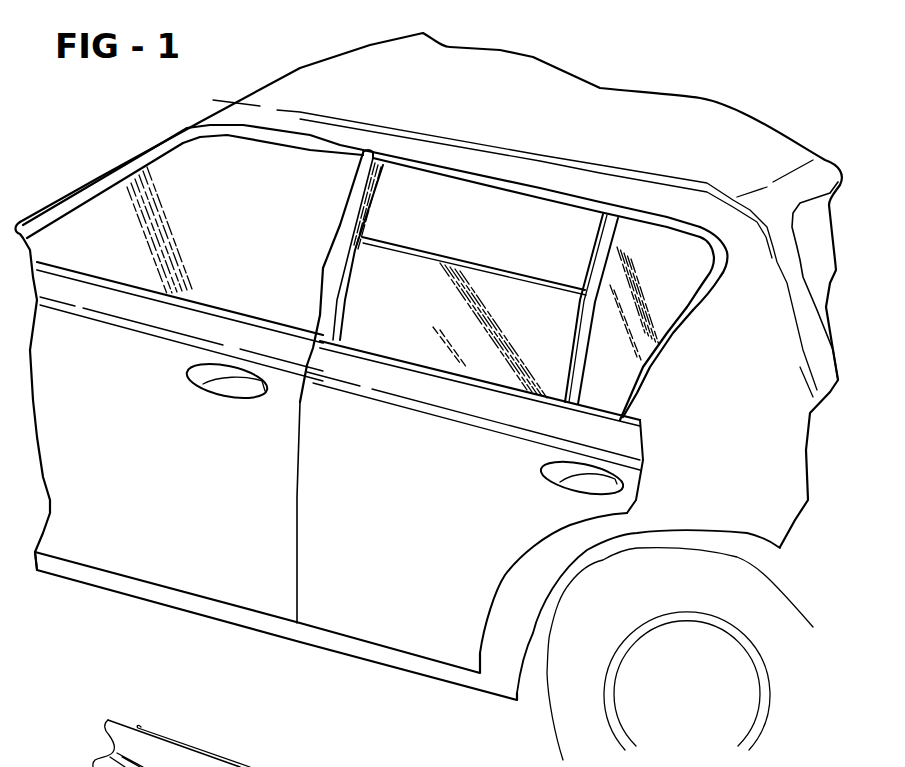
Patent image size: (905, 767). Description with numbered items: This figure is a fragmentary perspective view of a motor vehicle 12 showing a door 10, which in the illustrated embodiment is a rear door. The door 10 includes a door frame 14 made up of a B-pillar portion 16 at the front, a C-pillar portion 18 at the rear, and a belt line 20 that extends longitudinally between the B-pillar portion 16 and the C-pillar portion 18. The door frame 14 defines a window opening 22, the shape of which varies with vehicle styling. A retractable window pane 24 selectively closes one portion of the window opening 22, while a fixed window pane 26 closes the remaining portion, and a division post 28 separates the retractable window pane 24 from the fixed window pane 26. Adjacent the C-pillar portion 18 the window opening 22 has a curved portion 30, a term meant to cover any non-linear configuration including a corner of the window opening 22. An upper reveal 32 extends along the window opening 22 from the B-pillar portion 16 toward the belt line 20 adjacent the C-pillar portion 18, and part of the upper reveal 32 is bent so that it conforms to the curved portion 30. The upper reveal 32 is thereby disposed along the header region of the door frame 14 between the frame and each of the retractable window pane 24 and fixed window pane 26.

The door 10 is at (492, 656).
The motor vehicle 12 is at (747, 533).
The door frame 14 is at (300, 590).
The B-pillar portion 16 is at (350, 195).
The C-pillar portion 18 is at (665, 361).
The belt line 20 is at (485, 388).
The window opening 22 is at (437, 170).
The retractable window pane 24 is at (433, 250).
The fixed window pane 26 is at (624, 376).
The division post 28 is at (606, 241).
The curved portion 30 is at (716, 261).
The upper reveal 32 is at (500, 172).